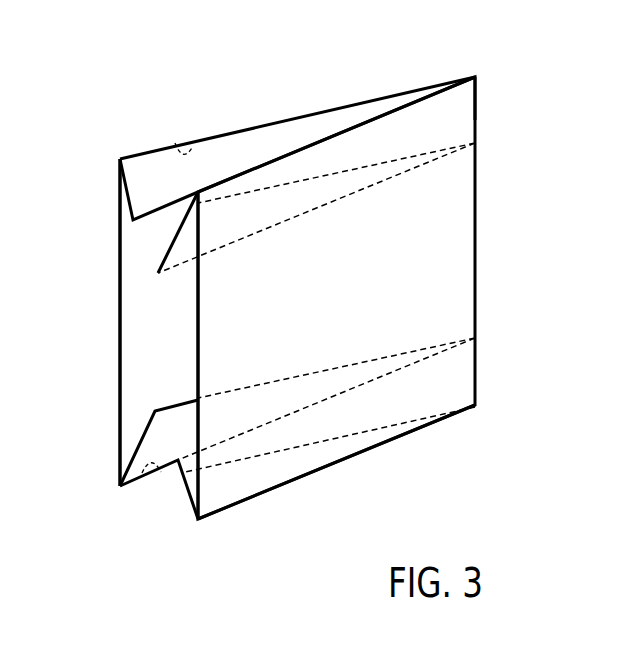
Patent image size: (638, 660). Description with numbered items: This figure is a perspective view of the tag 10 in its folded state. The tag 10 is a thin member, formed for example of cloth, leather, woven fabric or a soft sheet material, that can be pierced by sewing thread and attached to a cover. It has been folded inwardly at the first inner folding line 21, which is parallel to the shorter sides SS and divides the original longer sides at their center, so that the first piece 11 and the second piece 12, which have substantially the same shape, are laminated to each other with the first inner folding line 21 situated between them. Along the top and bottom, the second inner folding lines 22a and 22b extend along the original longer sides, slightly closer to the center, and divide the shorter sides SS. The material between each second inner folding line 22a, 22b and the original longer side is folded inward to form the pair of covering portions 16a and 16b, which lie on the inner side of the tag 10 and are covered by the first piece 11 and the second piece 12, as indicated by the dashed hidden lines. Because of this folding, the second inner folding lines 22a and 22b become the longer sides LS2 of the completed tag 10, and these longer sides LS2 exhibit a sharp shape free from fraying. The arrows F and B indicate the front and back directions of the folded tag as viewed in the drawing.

The tag 10 is at (507, 92).
The first piece 11 is at (355, 318).
The second piece 12 is at (172, 352).
The covering portion 16a is at (147, 189).
The covering portion 16b is at (170, 436).
The first inner folding line 21 is at (473, 115).
The second inner folding line 22a is at (192, 140).
The second inner folding line 22b is at (143, 476).
The longer side LS2 is at (296, 117).
The shorter side SS is at (120, 275).
The front direction F is at (82, 142).
The back direction B is at (515, 332).